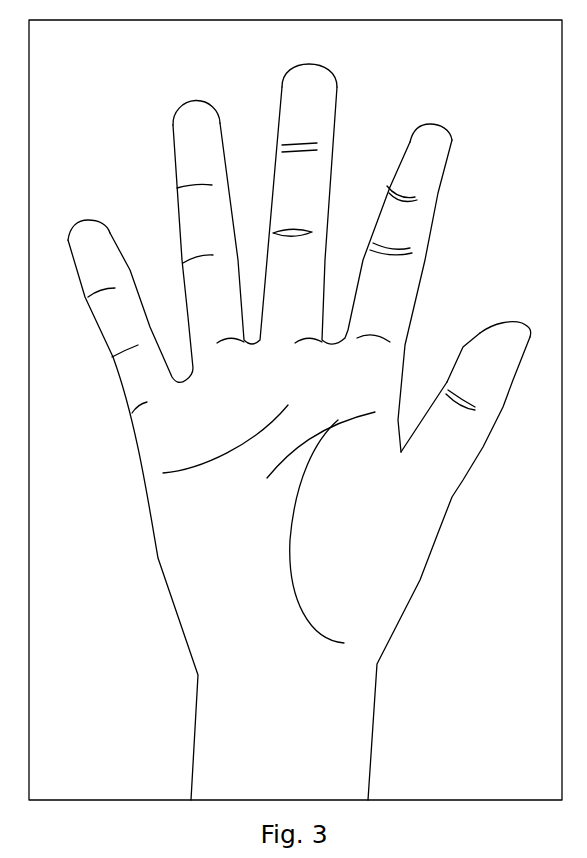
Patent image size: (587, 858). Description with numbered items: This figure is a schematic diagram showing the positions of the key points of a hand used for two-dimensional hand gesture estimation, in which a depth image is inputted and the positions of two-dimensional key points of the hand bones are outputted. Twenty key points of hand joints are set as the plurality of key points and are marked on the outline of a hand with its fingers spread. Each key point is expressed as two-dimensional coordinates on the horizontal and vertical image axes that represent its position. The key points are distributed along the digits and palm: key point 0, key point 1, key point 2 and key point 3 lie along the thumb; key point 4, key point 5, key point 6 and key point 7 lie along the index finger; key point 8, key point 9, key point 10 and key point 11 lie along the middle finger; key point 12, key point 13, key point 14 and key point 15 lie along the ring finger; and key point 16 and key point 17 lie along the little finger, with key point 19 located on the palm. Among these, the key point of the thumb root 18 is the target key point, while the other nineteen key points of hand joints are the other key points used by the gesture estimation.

The key point of hand joint 0 is at (89, 215).
The key point of hand joint 1 is at (101, 304).
The key point of hand joint 2 is at (125, 367).
The key point of hand joint 3 is at (143, 424).
The key point of hand joint 4 is at (196, 98).
The key point of hand joint 5 is at (194, 203).
The key point of hand joint 6 is at (198, 278).
The key point of hand joint 7 is at (230, 356).
The key point of hand joint 8 is at (309, 61).
The key point of hand joint 9 is at (299, 129).
The key point of hand joint 10 is at (297, 213).
The key point of hand joint 11 is at (299, 324).
The key point of hand joint 12 is at (433, 113).
The key point of hand joint 13 is at (411, 182).
The key point of hand joint 14 is at (394, 234).
The key point of hand joint 15 is at (379, 322).
The key point of hand joint 16 is at (509, 311).
The key point of hand joint 17 is at (472, 391).
The key point of thumb root 18 is at (433, 427).
The key point of hand joint 19 is at (323, 531).